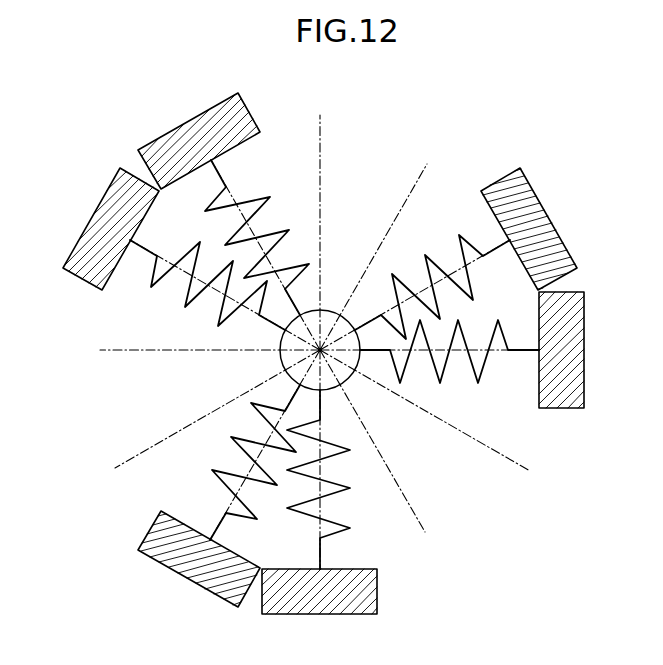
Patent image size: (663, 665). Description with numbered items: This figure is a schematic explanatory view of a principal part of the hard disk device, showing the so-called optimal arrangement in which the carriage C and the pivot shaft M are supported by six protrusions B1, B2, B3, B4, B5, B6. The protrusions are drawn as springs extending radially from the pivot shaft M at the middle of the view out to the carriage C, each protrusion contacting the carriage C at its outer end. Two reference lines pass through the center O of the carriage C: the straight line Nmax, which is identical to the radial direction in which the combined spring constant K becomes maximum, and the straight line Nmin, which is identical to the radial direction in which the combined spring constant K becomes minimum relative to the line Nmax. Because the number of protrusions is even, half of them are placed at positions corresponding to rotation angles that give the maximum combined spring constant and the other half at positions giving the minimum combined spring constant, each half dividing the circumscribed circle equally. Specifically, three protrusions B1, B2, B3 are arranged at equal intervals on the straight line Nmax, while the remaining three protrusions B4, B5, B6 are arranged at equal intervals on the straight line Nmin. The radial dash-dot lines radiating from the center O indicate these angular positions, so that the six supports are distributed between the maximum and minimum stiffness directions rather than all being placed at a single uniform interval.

The protrusion B1 is at (304, 517).
The protrusion B2 is at (438, 263).
The protrusion B3 is at (196, 259).
The protrusion B4 is at (279, 227).
The protrusion B5 is at (222, 481).
The protrusion B6 is at (406, 376).
The pivot shaft M is at (244, 144).
The carriage C is at (333, 311).
The center O is at (323, 352).
The straight line Nmax is at (333, 126).
The straight line Nmin is at (432, 170).